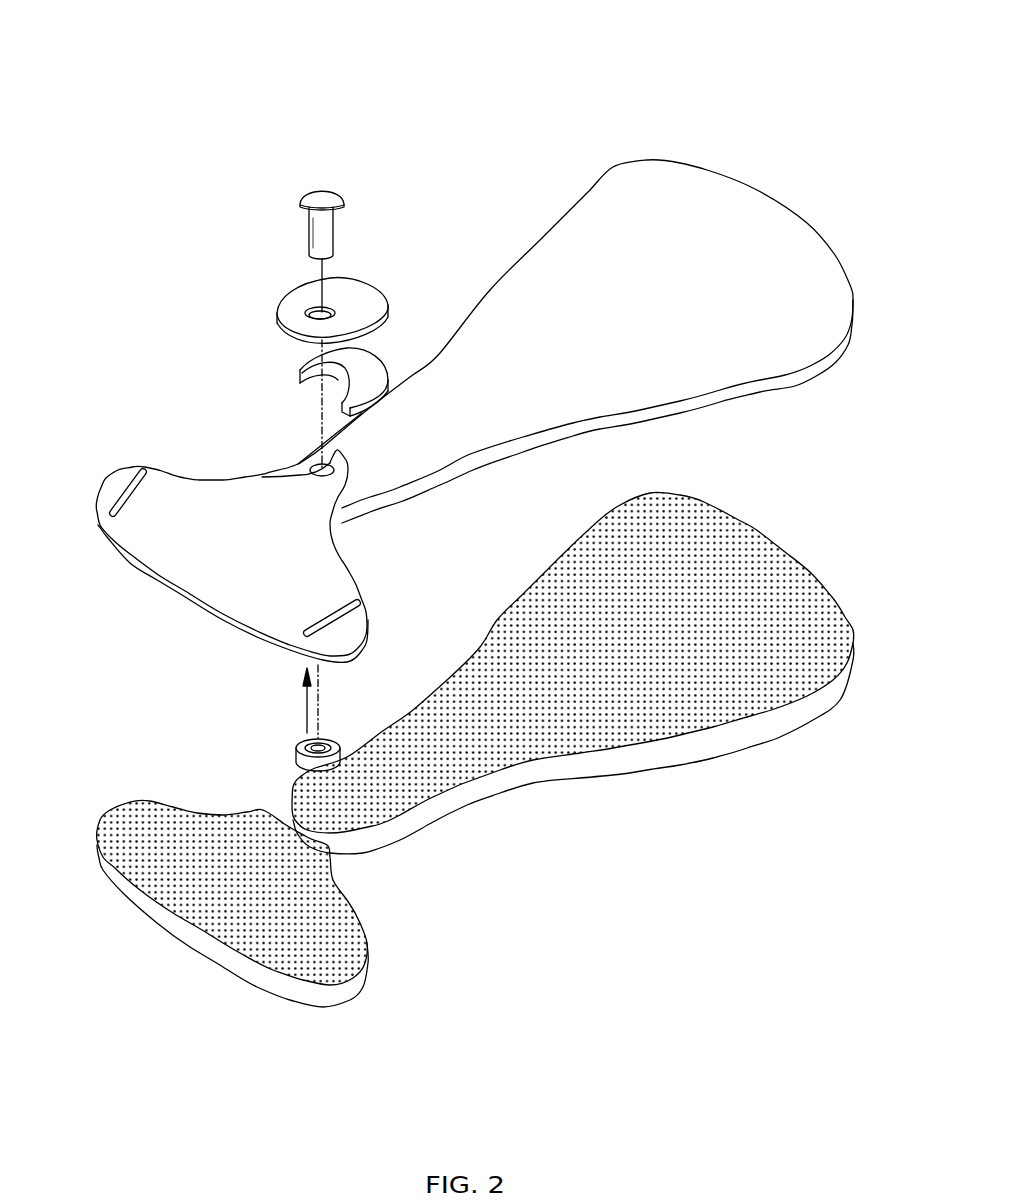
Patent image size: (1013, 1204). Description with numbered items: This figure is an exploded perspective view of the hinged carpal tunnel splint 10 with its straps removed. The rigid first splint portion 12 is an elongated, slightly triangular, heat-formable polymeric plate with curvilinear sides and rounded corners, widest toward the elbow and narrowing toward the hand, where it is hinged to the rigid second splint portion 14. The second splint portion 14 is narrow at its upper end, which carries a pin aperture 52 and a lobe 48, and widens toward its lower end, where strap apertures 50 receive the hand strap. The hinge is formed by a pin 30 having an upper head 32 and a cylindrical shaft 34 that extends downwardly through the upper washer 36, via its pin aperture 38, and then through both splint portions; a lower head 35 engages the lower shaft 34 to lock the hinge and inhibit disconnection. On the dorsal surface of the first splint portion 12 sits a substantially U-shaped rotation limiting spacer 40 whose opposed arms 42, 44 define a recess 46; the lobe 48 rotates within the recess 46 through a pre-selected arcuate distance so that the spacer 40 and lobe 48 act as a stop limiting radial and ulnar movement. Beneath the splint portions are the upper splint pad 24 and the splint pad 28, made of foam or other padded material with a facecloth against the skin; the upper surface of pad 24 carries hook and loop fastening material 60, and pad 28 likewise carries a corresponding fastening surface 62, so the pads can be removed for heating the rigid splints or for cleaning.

The hinged carpal tunnel splint 10 is at (90, 188).
The first splint portion 12 is at (750, 207).
The second splint portion 14 is at (236, 531).
The upper splint pad 24 is at (573, 670).
The splint pad 28 is at (263, 915).
The pin 30 is at (352, 209).
The upper head 32 is at (310, 195).
The shaft 34 is at (317, 237).
The lower head 35 is at (300, 750).
The upper washer 36 is at (355, 287).
The pin aperture 38 is at (305, 305).
The rotation limiting spacer 40 is at (372, 362).
The arm 42 is at (300, 384).
The arm 44 is at (318, 414).
The recess 46 is at (314, 392).
The lobe 48 is at (330, 463).
The strap apertures 50 is at (127, 487).
The pin aperture 52 is at (330, 463).
The hook and loop fastening material 60 is at (768, 570).
The gripping surface of lower pad 62 is at (343, 925).